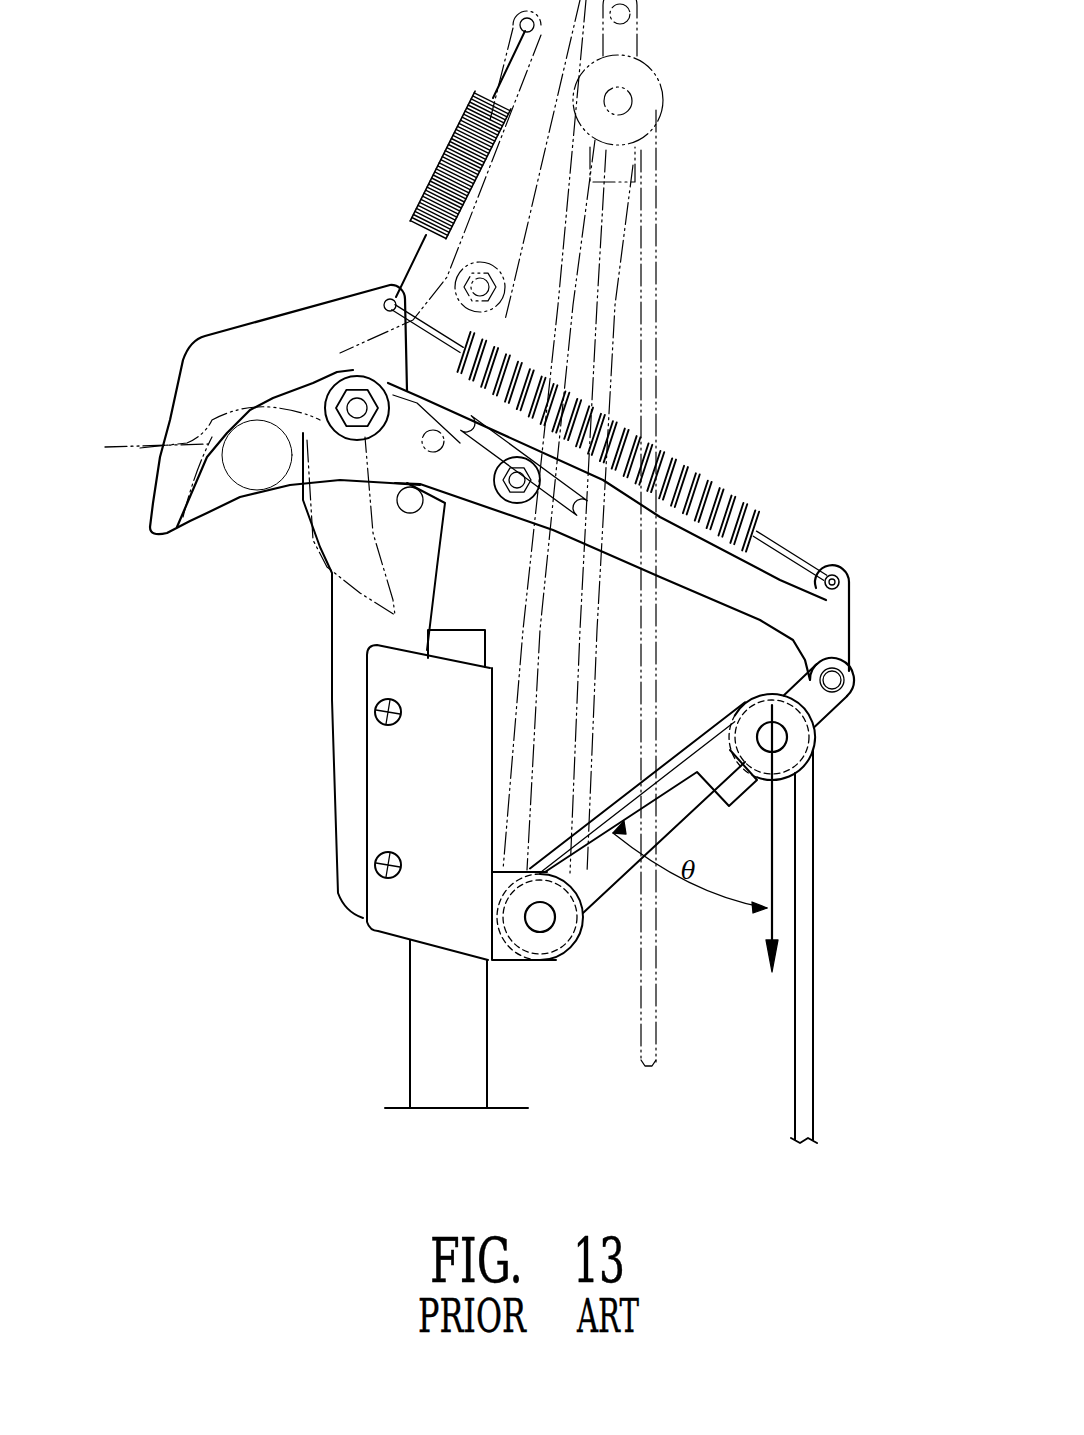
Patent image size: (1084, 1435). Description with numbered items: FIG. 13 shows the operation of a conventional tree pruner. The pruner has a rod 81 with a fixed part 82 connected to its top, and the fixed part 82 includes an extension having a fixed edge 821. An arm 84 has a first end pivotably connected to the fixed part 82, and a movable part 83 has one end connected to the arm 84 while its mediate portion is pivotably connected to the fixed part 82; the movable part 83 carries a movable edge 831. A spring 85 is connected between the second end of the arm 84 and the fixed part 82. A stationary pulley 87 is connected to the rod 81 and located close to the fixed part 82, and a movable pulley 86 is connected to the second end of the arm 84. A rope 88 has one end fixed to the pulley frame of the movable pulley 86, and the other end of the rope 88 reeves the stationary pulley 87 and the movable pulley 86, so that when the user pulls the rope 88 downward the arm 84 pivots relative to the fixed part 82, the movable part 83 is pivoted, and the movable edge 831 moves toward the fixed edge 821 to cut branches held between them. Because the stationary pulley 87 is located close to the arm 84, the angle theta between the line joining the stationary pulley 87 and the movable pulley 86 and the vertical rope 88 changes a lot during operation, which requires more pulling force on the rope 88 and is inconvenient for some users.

The rod 81 is at (428, 1062).
The fixed part 82 is at (260, 327).
The fixed edge 821 is at (133, 447).
The movable part 83 is at (387, 463).
The movable edge 831 is at (208, 490).
The arm 84 is at (710, 562).
The spring 85 is at (688, 465).
The movable pulley 86 is at (812, 738).
The stationary pulley 87 is at (560, 953).
The rope 88 is at (800, 1030).